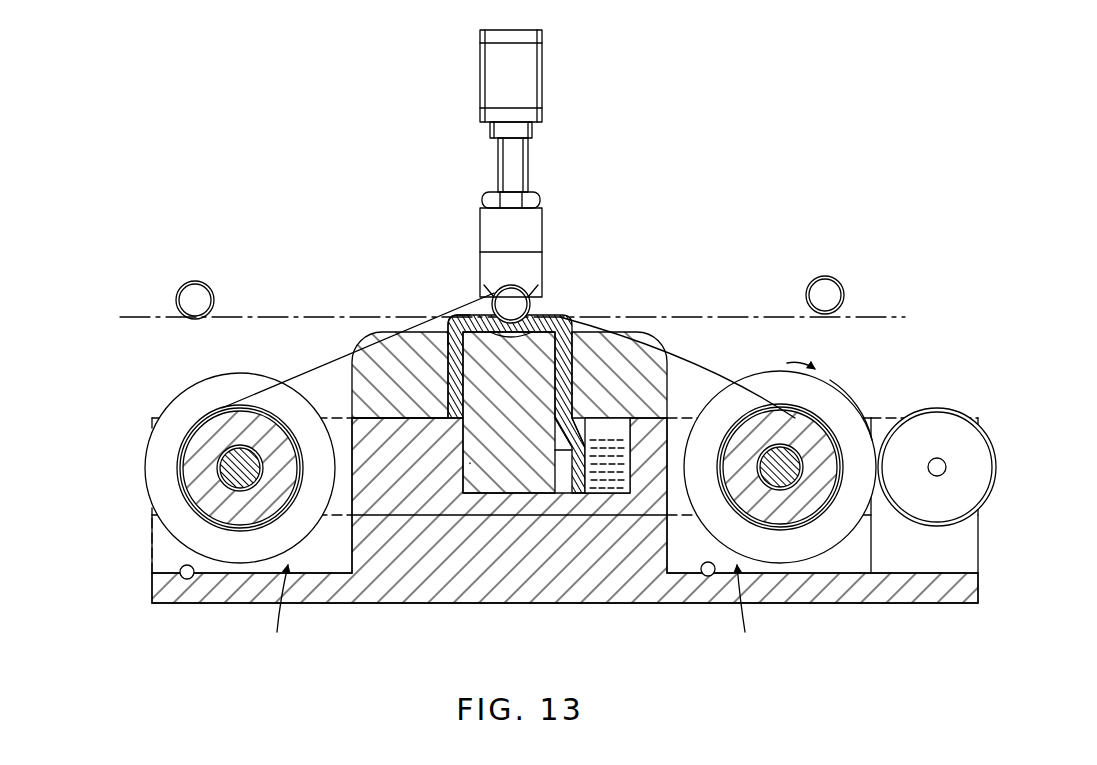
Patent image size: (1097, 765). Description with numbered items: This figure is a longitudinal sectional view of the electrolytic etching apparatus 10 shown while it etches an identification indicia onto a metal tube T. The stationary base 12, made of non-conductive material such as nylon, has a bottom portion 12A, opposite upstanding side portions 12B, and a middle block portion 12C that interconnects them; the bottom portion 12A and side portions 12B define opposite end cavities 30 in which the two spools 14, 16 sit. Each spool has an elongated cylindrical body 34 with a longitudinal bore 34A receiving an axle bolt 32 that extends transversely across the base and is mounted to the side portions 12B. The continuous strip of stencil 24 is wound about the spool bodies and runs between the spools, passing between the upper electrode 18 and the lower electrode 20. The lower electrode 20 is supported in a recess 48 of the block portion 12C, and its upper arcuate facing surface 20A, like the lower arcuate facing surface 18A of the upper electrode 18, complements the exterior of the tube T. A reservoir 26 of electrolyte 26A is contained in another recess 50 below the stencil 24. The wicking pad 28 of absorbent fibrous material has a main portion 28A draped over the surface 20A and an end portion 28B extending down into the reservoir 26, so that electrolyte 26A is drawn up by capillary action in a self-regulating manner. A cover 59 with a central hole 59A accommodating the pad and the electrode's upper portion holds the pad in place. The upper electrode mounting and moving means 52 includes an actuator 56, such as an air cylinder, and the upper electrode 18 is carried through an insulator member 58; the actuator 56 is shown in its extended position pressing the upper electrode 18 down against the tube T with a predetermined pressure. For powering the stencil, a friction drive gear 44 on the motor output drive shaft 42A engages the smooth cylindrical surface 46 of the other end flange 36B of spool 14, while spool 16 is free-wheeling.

The electrolytic etching apparatus 10 is at (628, 150).
The stationary base 12 is at (413, 604).
The bottom portion 12A is at (213, 605).
The side portions 12B is at (148, 531).
The block portion 12C is at (368, 440).
The spool 14 is at (747, 612).
The spool 16 is at (274, 612).
The upper electrode 18 is at (542, 253).
The lower arcuate facing surface 18A is at (498, 298).
The lower electrode 20 is at (525, 473).
The upper arcuate facing surface 20A is at (541, 283).
The strip of stencil 24 is at (688, 350).
The reservoir 26 is at (613, 490).
The electrolyte 26A is at (603, 477).
The wicking pad 28 is at (580, 318).
The main portion 28A is at (468, 320).
The end portion 28B is at (620, 455).
The end cavities 30 is at (185, 581).
The axle bolts 32 is at (230, 458).
The cylindrical body 34 is at (198, 495).
The longitudinal bore 34A is at (213, 475).
The other end flange 36B is at (193, 543).
The output drive shaft 42A is at (947, 468).
The friction drive gear 44 is at (990, 500).
The smooth cylindrical surface 46 is at (858, 410).
The recess 48 is at (470, 463).
The recess 50 is at (782, 447).
The upper electrode mounting and moving means 52 is at (549, 150).
The actuator 56 is at (542, 40).
The insulator member 58 is at (542, 222).
The cover 59 is at (366, 410).
The central hole 59A is at (450, 336).
The metal tube T is at (188, 284).